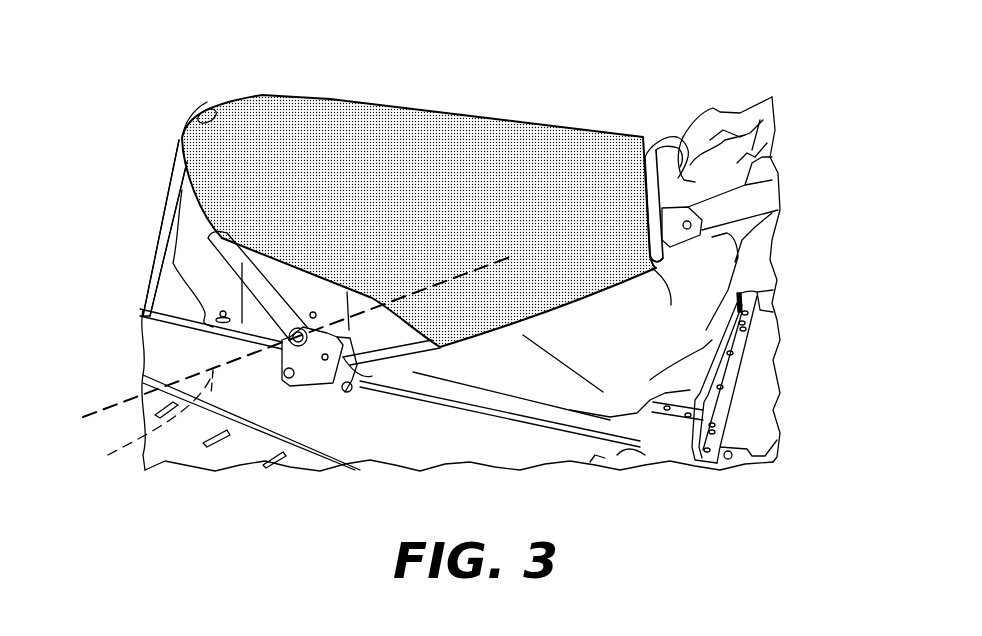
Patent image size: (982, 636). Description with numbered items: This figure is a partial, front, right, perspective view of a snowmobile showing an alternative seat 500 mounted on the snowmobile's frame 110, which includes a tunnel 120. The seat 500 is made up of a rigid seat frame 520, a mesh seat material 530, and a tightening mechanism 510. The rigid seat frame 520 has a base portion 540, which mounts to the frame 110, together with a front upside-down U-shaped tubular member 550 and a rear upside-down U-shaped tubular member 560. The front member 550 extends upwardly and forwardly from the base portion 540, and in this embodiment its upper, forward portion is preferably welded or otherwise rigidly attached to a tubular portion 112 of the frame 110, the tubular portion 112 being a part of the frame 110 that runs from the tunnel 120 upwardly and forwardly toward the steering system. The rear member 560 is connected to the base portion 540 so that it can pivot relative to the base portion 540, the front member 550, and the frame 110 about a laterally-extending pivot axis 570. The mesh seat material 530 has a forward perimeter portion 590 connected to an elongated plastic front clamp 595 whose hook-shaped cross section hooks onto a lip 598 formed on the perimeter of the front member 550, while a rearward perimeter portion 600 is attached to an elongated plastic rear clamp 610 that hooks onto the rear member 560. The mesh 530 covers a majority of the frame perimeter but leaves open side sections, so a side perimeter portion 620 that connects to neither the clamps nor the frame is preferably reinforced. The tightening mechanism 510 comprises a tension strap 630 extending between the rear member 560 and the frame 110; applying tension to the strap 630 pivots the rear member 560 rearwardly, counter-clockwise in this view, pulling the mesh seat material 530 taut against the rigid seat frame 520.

The frame 110 is at (735, 400).
The tubular portion 112 is at (722, 207).
The tunnel 120 is at (190, 361).
The seat 500 is at (255, 92).
The tightening mechanism 510 is at (163, 171).
The rigid seat frame 520 is at (268, 330).
The mesh seat material 530 is at (527, 152).
The base portion 540 is at (317, 373).
The front upside-down U-shaped tubular member 550 is at (423, 353).
The rear upside-down U-shaped tubular member 560 is at (243, 264).
The pivot axis 570 is at (284, 363).
The forward perimeter portion 590 is at (642, 150).
The front clamp 595 is at (660, 147).
The lip 598 is at (663, 262).
The rearward perimeter portion 600 is at (208, 112).
The rear clamp 610 is at (181, 137).
The side perimeter portion 620 is at (348, 292).
The tension strap 630 is at (167, 213).